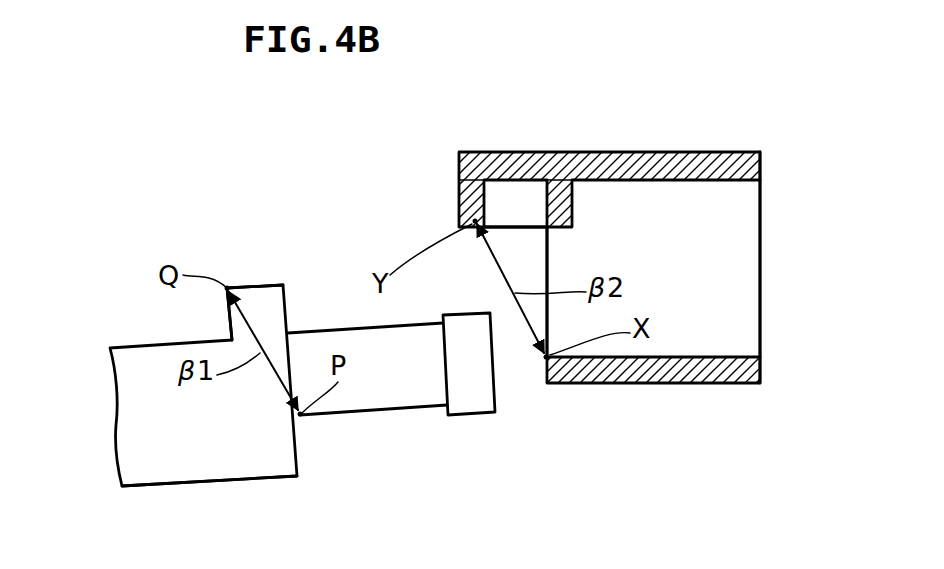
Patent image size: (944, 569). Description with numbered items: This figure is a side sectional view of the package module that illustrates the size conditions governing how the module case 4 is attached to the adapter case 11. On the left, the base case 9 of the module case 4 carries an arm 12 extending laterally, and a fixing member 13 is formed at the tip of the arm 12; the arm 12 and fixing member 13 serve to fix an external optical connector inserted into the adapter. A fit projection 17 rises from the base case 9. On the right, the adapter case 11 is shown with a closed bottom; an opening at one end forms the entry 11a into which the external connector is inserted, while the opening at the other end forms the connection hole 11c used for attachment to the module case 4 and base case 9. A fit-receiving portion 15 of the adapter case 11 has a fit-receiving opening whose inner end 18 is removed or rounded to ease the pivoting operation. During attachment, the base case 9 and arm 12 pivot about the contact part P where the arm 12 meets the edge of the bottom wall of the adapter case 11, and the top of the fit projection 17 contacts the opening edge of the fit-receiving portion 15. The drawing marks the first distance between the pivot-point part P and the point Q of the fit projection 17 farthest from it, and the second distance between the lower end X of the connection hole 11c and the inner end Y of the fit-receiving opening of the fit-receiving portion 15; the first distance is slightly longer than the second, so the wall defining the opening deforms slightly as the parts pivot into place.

The module case 4 is at (136, 462).
The base case 9 is at (178, 467).
The adapter case 11 is at (700, 153).
The entry 11a is at (760, 311).
The connection hole 11c is at (515, 350).
The arm 12 is at (336, 342).
The fixing member 13 is at (462, 358).
The fit-receiving portion 15 is at (459, 163).
The fit projection 17 is at (257, 297).
The inner end 18 is at (487, 222).